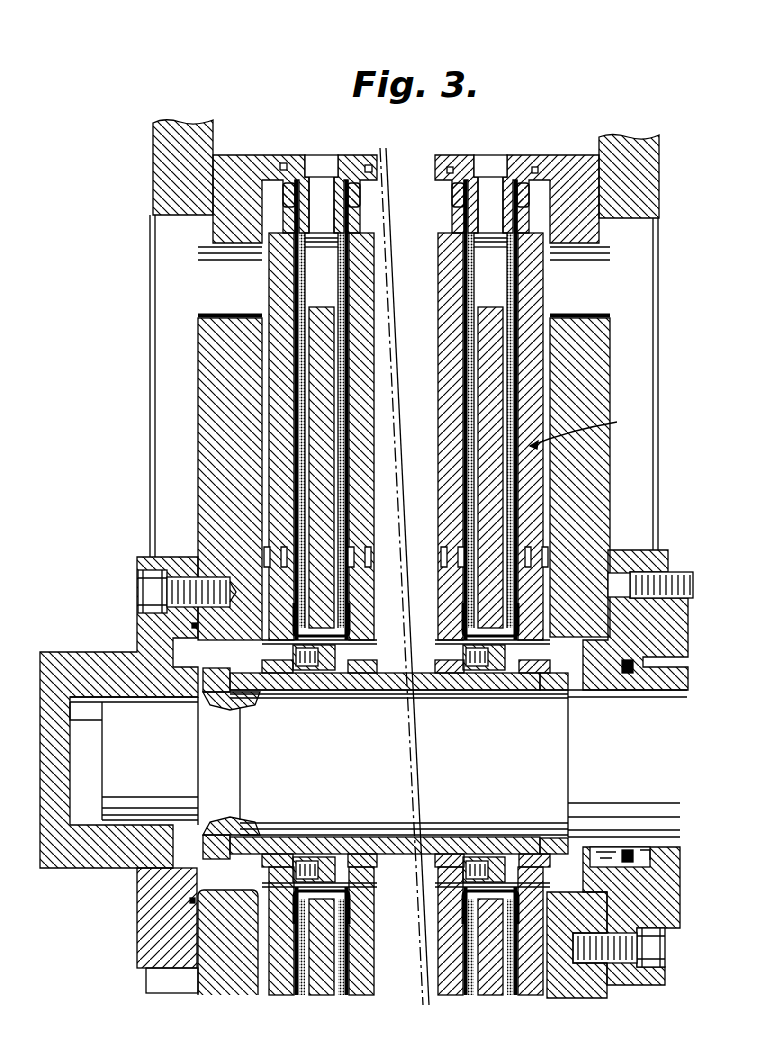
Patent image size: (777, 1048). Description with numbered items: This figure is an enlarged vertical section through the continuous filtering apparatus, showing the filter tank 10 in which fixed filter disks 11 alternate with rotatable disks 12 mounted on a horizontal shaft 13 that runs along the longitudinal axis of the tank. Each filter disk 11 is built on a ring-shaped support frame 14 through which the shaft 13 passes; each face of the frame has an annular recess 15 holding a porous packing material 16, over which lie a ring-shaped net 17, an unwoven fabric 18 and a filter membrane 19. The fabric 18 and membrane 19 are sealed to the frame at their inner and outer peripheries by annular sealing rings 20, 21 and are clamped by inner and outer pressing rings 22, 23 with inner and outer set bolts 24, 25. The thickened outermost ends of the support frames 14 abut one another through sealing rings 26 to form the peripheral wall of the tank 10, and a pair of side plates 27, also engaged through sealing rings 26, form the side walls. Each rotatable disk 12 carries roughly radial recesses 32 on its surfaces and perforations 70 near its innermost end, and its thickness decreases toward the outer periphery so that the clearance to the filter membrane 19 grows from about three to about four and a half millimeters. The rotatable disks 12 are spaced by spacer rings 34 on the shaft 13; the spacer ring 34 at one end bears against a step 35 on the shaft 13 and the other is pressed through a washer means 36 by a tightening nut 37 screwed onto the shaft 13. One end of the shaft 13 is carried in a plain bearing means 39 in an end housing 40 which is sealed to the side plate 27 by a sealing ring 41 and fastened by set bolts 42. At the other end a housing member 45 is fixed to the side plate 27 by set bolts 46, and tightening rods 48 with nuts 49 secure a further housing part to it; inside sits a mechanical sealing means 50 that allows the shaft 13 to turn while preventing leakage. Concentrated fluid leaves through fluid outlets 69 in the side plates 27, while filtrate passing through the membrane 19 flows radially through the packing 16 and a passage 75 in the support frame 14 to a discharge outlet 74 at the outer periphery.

The filter tank 10 is at (570, 156).
The filter disk 11 is at (292, 372).
The rotatable disk 12 is at (280, 318).
The rotatable horizontal shaft 13 is at (541, 676).
The ring-shaped support frame 14 is at (480, 382).
The annular recess 15 is at (298, 432).
The porous packing material 16 is at (300, 347).
The ring-shaped net 17 is at (345, 466).
The unwoven fabric 18 is at (298, 256).
The filter membrane 19 is at (306, 290).
The inner annular sealing ring 20 is at (340, 690).
The outer annular sealing ring 21 is at (368, 165).
The inner pressing ring 22 is at (346, 626).
The outer pressing ring 23 is at (262, 172).
The inner set bolt 24 is at (305, 668).
The outer set bolt 25 is at (534, 167).
The sealing ring 26 is at (284, 163).
The side plate 27 is at (212, 432).
The recess 32 is at (268, 553).
The spacer ring 34 is at (325, 672).
The step 35 is at (554, 832).
The washer means 36 is at (228, 680).
The tightening nut 37 is at (198, 822).
The plain bearing means 39 is at (112, 838).
The end housing 40 is at (104, 660).
The sealing ring 41 is at (194, 630).
The set bolt 42 is at (170, 592).
The housing member 45 is at (640, 880).
The set bolt 46 is at (566, 895).
The tightening rod 48 is at (645, 578).
The nut 49 is at (160, 222).
The mechanical sealing means 50 is at (640, 692).
The fluid outlet 69 is at (205, 290).
The perforation 70 is at (398, 668).
The discharge outlet 74 is at (320, 168).
The passage 75 is at (338, 238).